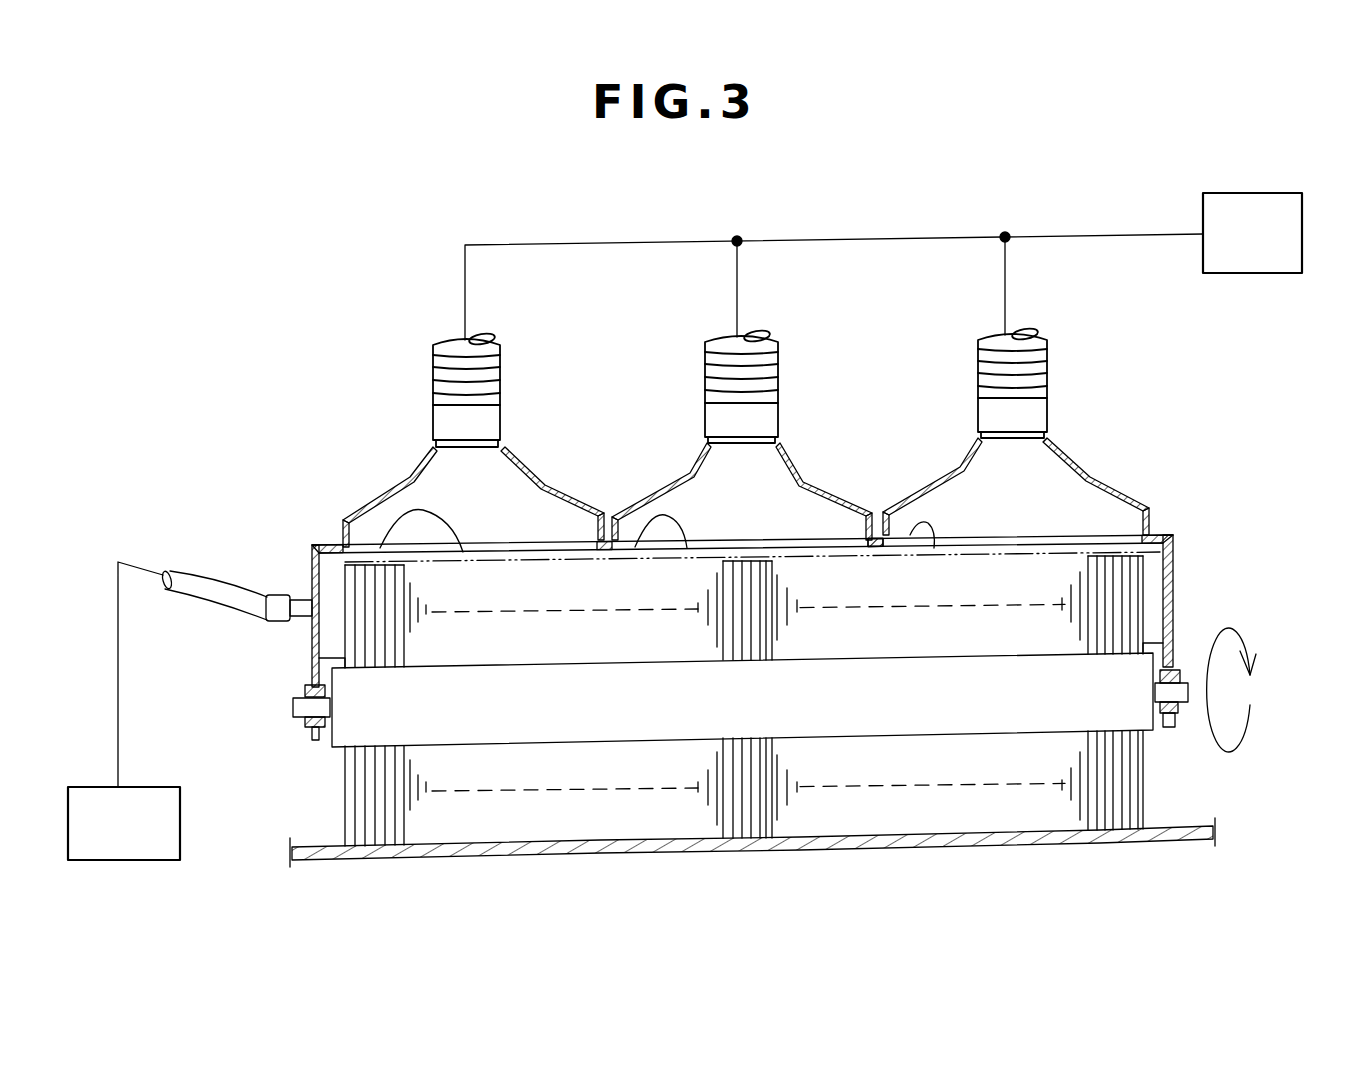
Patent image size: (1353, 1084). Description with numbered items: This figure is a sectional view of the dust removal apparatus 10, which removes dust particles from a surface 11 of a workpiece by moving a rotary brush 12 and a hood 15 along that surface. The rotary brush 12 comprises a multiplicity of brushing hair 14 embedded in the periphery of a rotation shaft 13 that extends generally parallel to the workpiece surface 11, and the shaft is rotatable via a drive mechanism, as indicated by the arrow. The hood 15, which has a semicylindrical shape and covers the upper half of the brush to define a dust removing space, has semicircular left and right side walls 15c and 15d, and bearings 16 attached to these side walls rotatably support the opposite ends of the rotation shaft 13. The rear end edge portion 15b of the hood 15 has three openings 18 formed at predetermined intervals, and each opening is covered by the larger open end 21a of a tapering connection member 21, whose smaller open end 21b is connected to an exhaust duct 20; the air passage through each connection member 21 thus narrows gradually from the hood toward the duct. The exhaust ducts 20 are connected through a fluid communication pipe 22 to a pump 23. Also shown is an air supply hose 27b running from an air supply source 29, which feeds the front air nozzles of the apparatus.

The dust removal apparatus 10 is at (343, 183).
The surface of a workpiece 11 is at (1181, 828).
The rotary brush 12 is at (348, 777).
The rotation shaft 13 is at (522, 730).
The brushing hair 14 is at (770, 815).
The hood 15 is at (1178, 547).
The linear rear end edge 15b is at (873, 540).
The left side wall 15c is at (312, 563).
The right side wall 15d is at (1175, 598).
The bearings 16 is at (303, 720).
The openings 18 is at (460, 550).
The exhaust ducts 20 is at (436, 352).
The tapering connection member 21 is at (388, 487).
The larger open end 21a is at (340, 523).
The smaller open end 21b is at (433, 441).
The fluid communication pipe 22 is at (862, 243).
The pump 23 is at (1245, 200).
The air supply hose 27b is at (212, 598).
The air supply source 29 is at (138, 852).